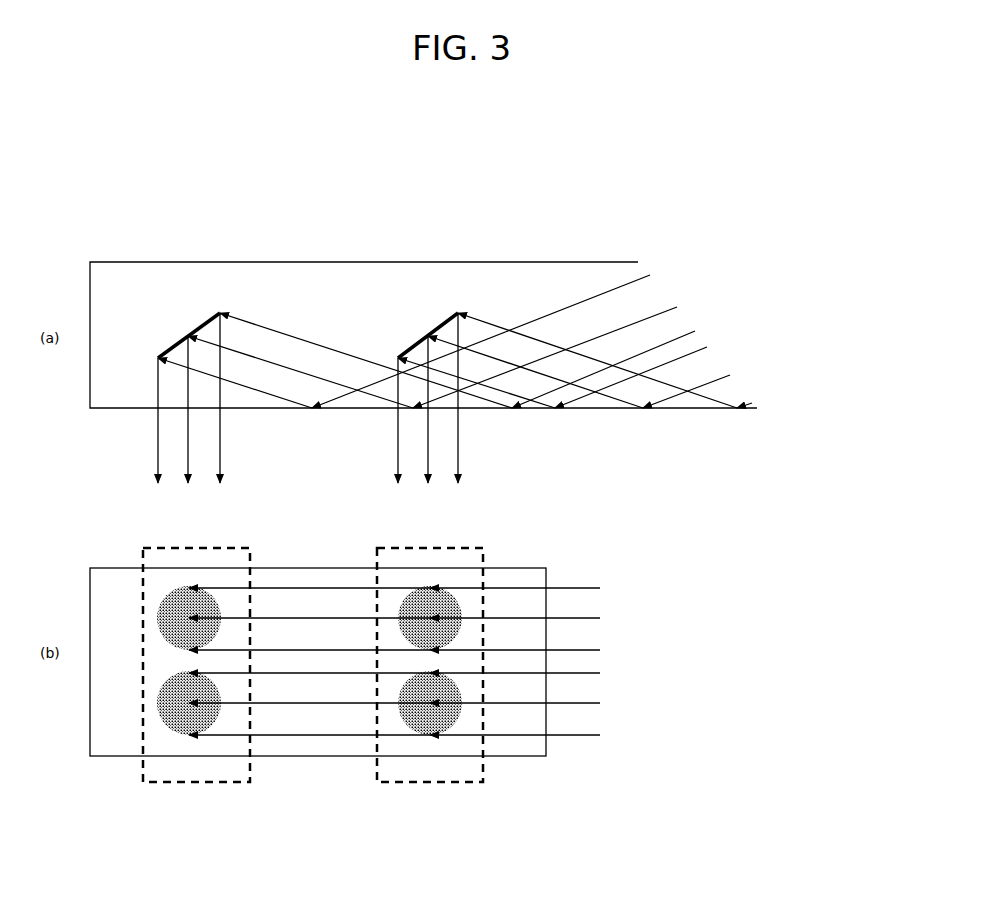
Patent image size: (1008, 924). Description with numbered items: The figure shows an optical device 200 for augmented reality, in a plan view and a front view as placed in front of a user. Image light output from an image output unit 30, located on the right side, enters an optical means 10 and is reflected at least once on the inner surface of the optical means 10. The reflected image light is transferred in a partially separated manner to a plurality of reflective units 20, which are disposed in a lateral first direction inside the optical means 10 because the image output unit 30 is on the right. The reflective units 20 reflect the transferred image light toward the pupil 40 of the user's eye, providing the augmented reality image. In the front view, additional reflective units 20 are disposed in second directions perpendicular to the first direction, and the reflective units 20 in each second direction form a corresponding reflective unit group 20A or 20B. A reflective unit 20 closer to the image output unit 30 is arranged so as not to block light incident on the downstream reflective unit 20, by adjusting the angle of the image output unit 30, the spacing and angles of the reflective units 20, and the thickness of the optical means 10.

The optical device for augmented reality 200 is at (474, 236).
The optical means 10 is at (272, 262).
The reflective unit 20 is at (175, 338).
The image output unit 30 is at (535, 505).
The pupil 40 is at (366, 412).
The reflective unit group 20A is at (435, 783).
The reflective unit group 20B is at (202, 783).